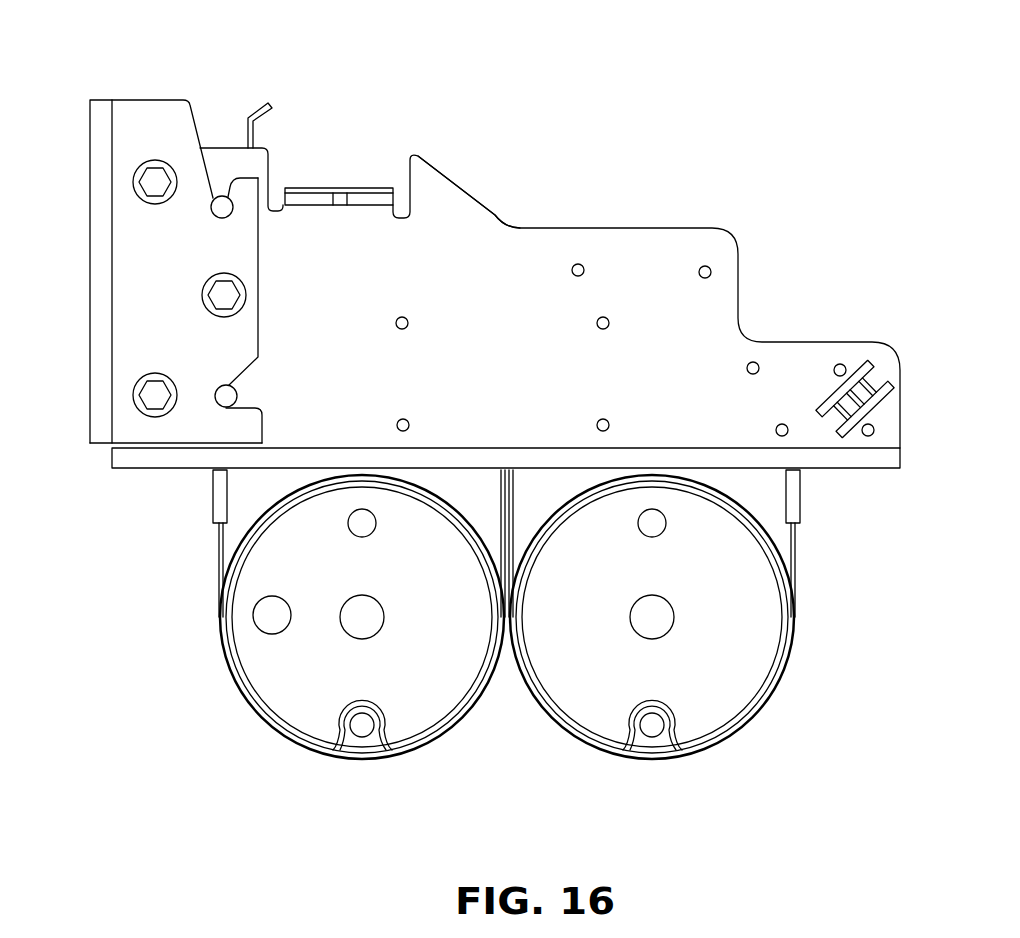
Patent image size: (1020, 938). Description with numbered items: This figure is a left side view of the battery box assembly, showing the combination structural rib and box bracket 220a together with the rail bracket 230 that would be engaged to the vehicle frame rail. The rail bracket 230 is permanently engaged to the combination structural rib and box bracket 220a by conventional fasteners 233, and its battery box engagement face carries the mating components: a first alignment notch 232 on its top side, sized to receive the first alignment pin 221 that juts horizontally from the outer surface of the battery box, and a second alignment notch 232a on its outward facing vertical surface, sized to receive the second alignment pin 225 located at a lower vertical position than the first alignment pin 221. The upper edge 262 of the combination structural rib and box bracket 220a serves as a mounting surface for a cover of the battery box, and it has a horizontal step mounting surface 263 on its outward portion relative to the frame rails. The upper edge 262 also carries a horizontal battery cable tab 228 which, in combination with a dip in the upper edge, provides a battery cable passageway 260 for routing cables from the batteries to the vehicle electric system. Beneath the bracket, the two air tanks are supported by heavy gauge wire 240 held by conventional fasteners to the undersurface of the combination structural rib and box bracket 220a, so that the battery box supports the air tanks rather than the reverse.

The combination structural rib and box bracket 220a is at (645, 272).
The first alignment pin 221 is at (228, 202).
The second alignment pin 225 is at (225, 402).
The horizontal battery cable tab 228 is at (372, 207).
The rail bracket 230 is at (160, 147).
The first alignment notch 232 is at (233, 221).
The second alignment notch 232a is at (216, 381).
The conventional fasteners 233 is at (173, 174).
The heavy gauge wire 240 is at (448, 736).
The battery cable passageway 260 is at (357, 187).
The upper edge 262 is at (534, 224).
The horizontal step mounting surface 263 is at (815, 339).